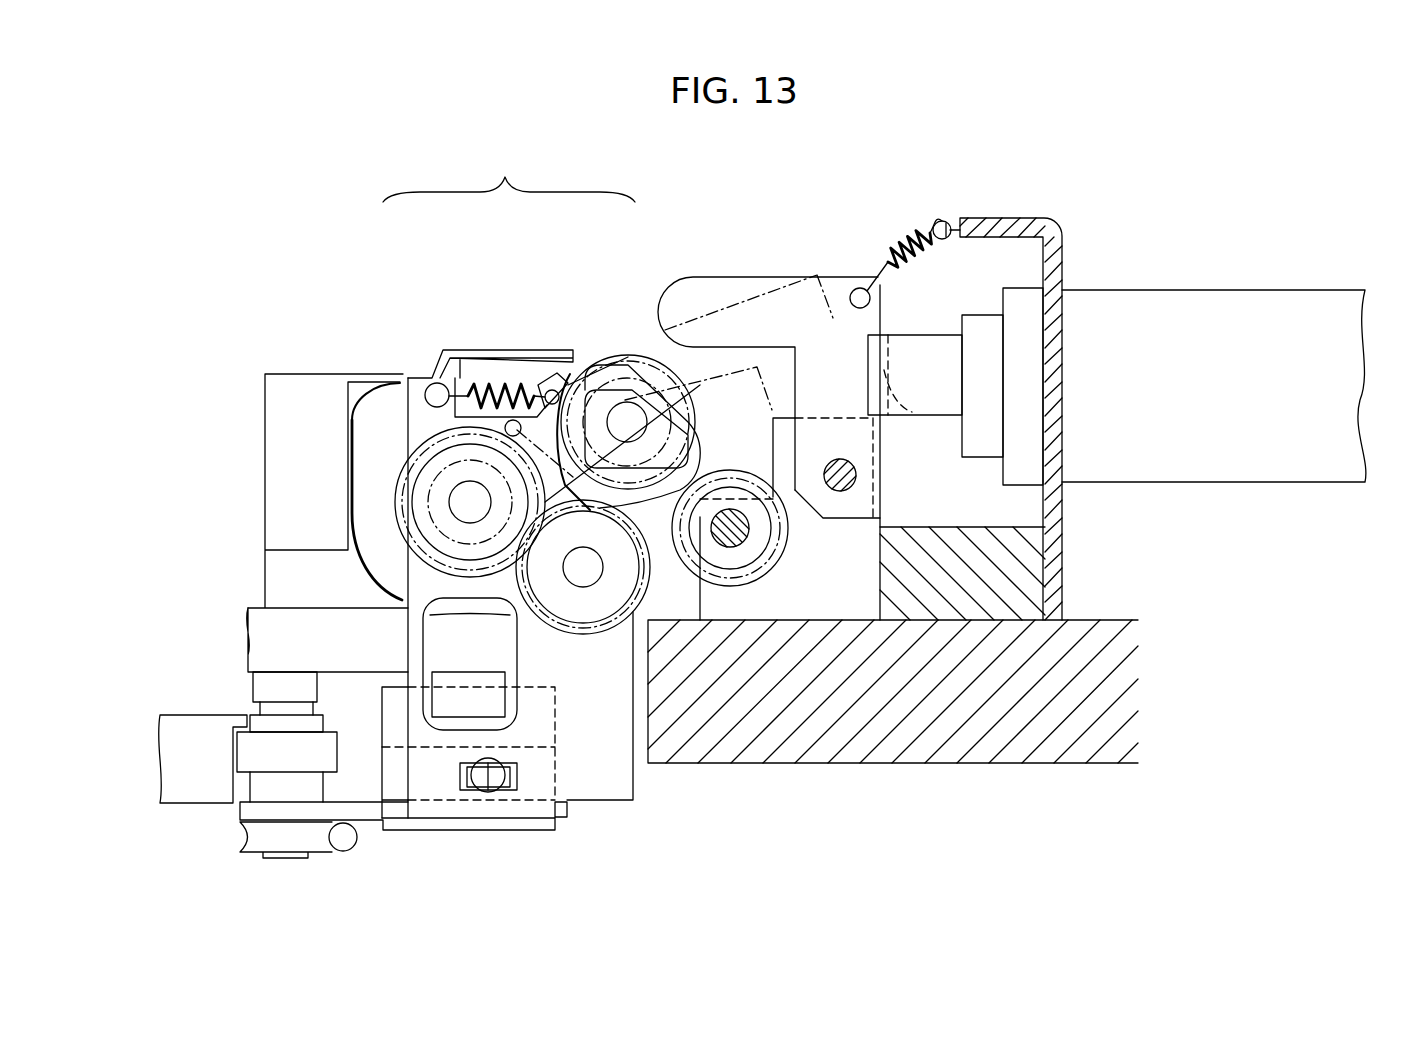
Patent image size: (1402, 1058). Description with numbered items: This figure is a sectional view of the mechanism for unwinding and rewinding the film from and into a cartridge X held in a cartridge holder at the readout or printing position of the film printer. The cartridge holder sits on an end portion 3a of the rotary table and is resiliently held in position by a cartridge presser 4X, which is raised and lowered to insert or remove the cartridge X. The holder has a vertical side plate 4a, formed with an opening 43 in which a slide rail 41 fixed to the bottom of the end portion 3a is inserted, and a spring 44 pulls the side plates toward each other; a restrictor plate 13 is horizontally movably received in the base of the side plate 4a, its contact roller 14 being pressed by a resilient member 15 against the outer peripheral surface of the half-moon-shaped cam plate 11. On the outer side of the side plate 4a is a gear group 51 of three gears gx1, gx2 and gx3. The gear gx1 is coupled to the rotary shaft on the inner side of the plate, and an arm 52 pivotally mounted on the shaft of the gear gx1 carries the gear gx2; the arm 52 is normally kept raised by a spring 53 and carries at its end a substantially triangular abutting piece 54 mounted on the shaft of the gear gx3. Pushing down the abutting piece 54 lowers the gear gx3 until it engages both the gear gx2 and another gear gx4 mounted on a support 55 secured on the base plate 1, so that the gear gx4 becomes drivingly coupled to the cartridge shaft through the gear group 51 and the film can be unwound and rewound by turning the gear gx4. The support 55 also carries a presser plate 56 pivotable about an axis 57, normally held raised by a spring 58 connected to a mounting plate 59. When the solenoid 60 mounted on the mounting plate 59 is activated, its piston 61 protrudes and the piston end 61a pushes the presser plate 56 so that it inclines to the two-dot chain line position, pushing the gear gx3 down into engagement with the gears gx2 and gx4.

The base plate 1 is at (992, 745).
The end portion 3a is at (272, 633).
The side plate 4a is at (608, 785).
The cartridge presser 4X is at (526, 350).
The cam plate 11 is at (172, 750).
The restrictor plate 13 is at (378, 810).
The contact roller 14 is at (282, 757).
The resilient member 15 is at (342, 853).
The slide rail 41 is at (457, 702).
The opening 43 is at (428, 657).
The spring 44 is at (494, 778).
The gear group 51 is at (509, 169).
The arm 52 is at (593, 380).
The spring 53 is at (482, 395).
The abutting piece 54 is at (643, 365).
The support 55 is at (857, 603).
The presser plate 56 is at (718, 287).
The axis 57 is at (858, 477).
The spring 58 is at (891, 247).
The mounting plate 59 is at (1060, 252).
The solenoid 60 is at (1210, 297).
The piston 61 is at (972, 438).
The piston end 61a is at (930, 353).
The cartridge X is at (375, 412).
The gear gX1 gx1 is at (450, 437).
The gear gX2 gx2 is at (591, 500).
The gear gX3 gx3 is at (626, 354).
The gear gX4 gx4 is at (780, 547).